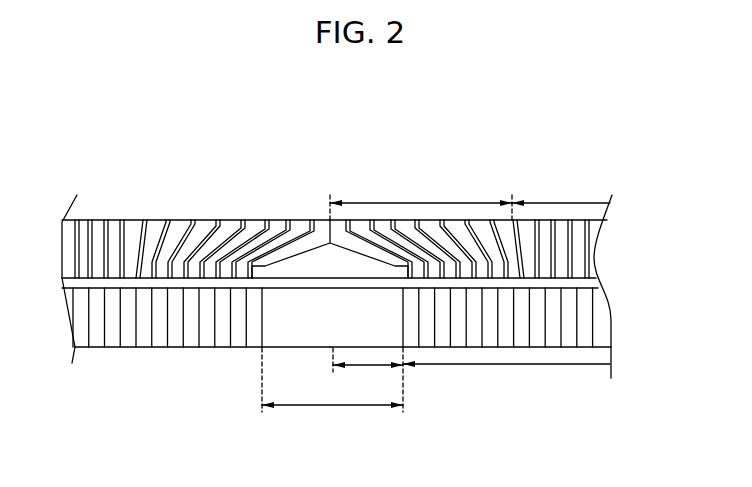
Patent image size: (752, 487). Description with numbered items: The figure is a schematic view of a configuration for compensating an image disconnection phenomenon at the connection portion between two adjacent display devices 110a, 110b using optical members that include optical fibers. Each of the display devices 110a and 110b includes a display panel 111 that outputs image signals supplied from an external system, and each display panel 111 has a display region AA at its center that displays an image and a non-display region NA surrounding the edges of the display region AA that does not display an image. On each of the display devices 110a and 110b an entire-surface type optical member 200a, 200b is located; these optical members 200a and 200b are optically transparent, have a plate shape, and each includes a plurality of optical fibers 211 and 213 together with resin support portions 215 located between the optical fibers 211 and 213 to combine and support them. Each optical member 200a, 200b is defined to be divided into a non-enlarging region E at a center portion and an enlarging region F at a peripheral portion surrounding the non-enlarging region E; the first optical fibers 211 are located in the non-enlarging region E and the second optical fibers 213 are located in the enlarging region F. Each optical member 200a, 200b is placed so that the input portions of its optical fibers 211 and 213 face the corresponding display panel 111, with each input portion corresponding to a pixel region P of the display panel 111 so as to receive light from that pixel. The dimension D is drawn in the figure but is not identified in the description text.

The first optical fibers 211 is at (93, 220).
The second optical fibers 213 is at (208, 222).
The resin support portions 215 is at (143, 222).
The entire-surface type optical member 200a is at (236, 203).
The entire-surface type optical member 200b is at (603, 186).
The display panel 111 is at (597, 327).
The pixel region P is at (97, 345).
The display device 110a is at (175, 388).
The display device 110b is at (567, 382).
The enlarging region F is at (421, 199).
The non-enlarging region E is at (561, 192).
The non-display region NA is at (368, 380).
The display region AA is at (506, 379).
The distance D is at (332, 391).